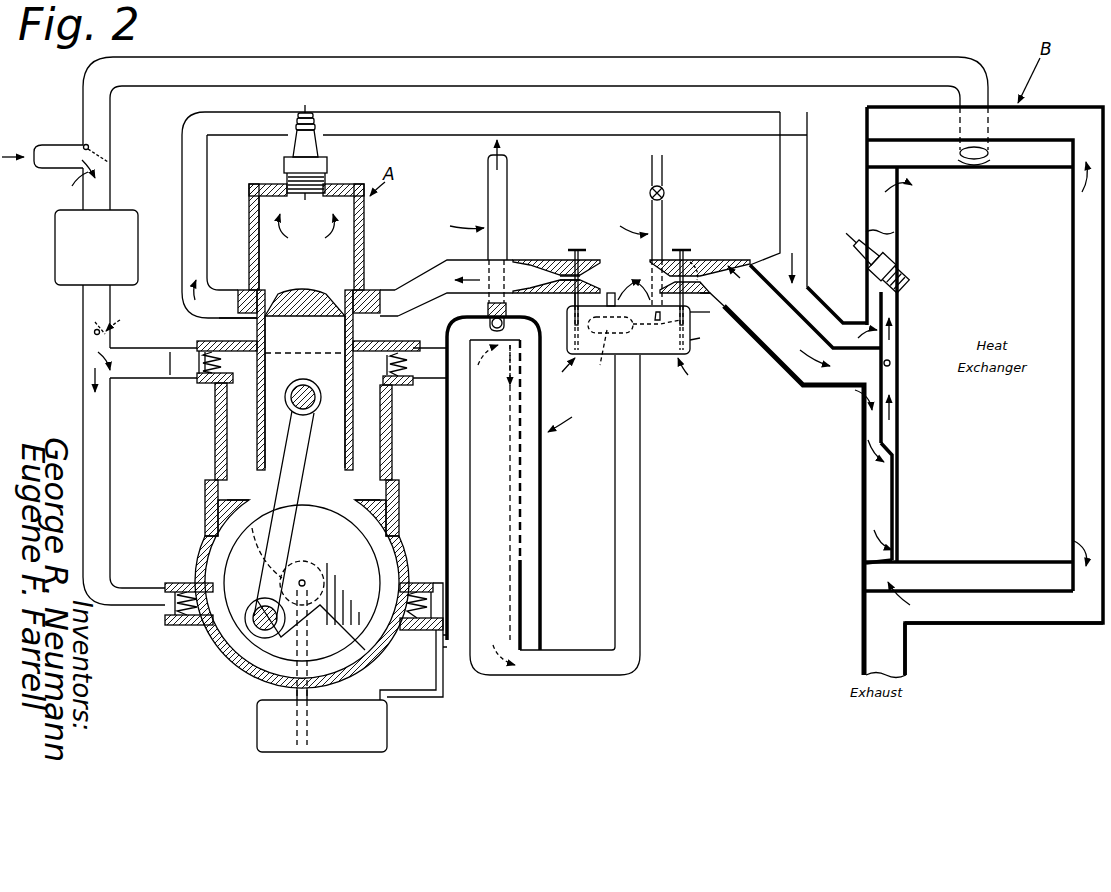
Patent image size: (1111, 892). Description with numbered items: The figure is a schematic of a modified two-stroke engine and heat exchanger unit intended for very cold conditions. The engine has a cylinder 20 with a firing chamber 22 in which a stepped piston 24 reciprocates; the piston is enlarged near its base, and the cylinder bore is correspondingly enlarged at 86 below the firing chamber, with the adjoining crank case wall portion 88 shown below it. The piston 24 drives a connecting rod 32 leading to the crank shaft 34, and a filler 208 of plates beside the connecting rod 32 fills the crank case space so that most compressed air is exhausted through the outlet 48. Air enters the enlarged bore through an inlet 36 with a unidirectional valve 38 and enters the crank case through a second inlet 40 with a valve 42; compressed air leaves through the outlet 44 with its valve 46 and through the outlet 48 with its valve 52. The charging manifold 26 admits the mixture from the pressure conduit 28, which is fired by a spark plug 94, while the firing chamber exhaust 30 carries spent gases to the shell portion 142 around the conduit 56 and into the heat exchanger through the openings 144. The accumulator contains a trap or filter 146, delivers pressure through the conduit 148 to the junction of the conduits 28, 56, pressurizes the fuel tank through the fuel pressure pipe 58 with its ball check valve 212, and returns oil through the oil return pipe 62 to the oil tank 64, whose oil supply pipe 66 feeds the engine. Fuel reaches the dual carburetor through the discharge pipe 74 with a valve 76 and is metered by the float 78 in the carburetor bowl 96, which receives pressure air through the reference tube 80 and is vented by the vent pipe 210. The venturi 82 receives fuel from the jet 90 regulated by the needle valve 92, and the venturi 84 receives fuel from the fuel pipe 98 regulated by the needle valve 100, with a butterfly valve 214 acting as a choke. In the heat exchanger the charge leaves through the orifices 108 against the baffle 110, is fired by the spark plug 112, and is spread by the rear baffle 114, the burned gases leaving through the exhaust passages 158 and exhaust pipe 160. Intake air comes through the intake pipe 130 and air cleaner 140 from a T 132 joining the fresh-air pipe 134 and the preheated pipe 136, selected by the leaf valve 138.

The cylinder 20 is at (252, 184).
The firing chamber 22 is at (258, 204).
The piston 24 is at (248, 328).
The fuel inlet charging manifold 26 is at (376, 292).
The pressure conduit 28 is at (432, 270).
The firing chamber exhaust 30 is at (223, 290).
The connecting rod 32 is at (306, 437).
The crank shaft 34 is at (344, 547).
The inlet 36 is at (184, 380).
The unidirectional valve 38 is at (207, 383).
The second inlet 40 is at (172, 582).
The unidirectional valve 42 is at (188, 626).
The outlet 44 is at (427, 375).
The valve 46 is at (397, 387).
The outlet 48 is at (413, 631).
The unidirectional valve 52 is at (427, 582).
The pressure conduit 56 is at (692, 255).
The fuel pressure pipe 58 is at (488, 166).
The oil return pipe 62 is at (442, 672).
The oil tank 64 is at (388, 726).
The oil supply pipe 66 is at (298, 692).
The discharge pipe 74 is at (651, 165).
The valve 76 is at (650, 190).
The float 78 is at (622, 353).
The pressure pipe lead-in or reference tube 80 is at (605, 308).
The venturi 82 is at (582, 275).
The venturi 84 is at (705, 262).
The enlarged cylinder bore 86 is at (212, 436).
The crankcase lower wall 88 is at (218, 470).
The fuel jet 90 is at (573, 305).
The needle valve 92 is at (576, 250).
The spark plug 94 is at (293, 148).
The carburetor bowl 96 is at (698, 345).
The fuel pipe 98 is at (698, 340).
The needle valve 100 is at (668, 300).
The orifices 108 is at (893, 362).
The baffle 110 is at (899, 404).
The spark plug 112 is at (851, 236).
The rear baffle 114 is at (892, 450).
The intake pipe 130 is at (83, 305).
The T 132 is at (70, 182).
The pipe 134 is at (55, 146).
The pipe 136 is at (262, 62).
The leaf valve 138 is at (110, 151).
The air cleaner 140 is at (133, 211).
The overlying shell portion 142 is at (805, 390).
The openings 144 is at (896, 548).
The trap or filter 146 is at (508, 523).
The conduit 148 is at (640, 490).
The exhaust passages 158 is at (988, 620).
The exhaust pipe 160 is at (906, 664).
The filler 208 is at (362, 652).
The vent pipe 210 is at (717, 304).
The ball check valve 212 is at (487, 310).
The butterfly valve 214 is at (745, 262).